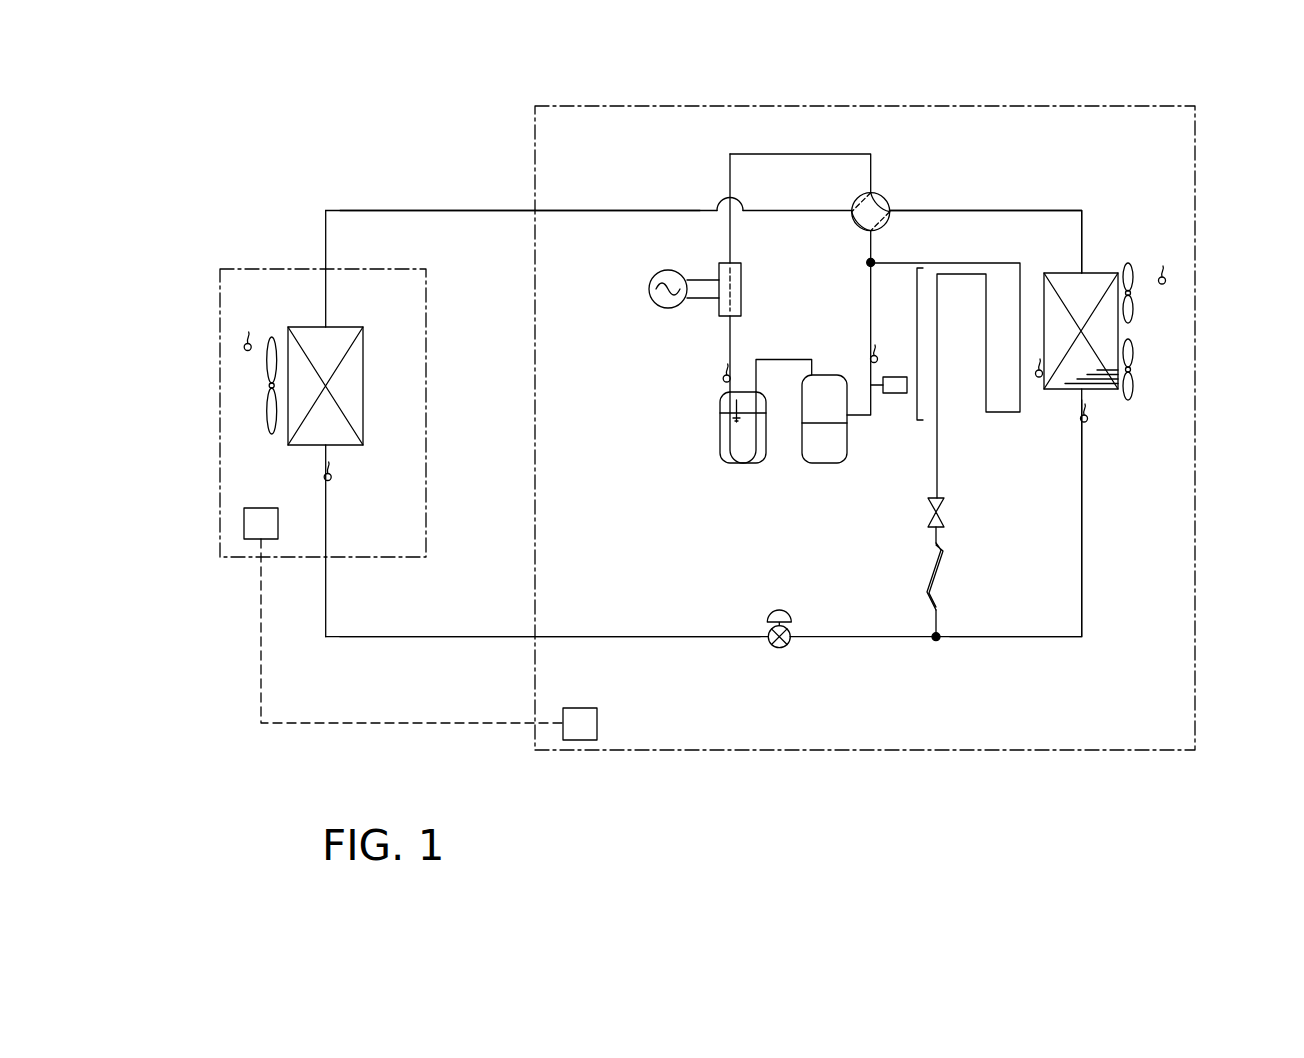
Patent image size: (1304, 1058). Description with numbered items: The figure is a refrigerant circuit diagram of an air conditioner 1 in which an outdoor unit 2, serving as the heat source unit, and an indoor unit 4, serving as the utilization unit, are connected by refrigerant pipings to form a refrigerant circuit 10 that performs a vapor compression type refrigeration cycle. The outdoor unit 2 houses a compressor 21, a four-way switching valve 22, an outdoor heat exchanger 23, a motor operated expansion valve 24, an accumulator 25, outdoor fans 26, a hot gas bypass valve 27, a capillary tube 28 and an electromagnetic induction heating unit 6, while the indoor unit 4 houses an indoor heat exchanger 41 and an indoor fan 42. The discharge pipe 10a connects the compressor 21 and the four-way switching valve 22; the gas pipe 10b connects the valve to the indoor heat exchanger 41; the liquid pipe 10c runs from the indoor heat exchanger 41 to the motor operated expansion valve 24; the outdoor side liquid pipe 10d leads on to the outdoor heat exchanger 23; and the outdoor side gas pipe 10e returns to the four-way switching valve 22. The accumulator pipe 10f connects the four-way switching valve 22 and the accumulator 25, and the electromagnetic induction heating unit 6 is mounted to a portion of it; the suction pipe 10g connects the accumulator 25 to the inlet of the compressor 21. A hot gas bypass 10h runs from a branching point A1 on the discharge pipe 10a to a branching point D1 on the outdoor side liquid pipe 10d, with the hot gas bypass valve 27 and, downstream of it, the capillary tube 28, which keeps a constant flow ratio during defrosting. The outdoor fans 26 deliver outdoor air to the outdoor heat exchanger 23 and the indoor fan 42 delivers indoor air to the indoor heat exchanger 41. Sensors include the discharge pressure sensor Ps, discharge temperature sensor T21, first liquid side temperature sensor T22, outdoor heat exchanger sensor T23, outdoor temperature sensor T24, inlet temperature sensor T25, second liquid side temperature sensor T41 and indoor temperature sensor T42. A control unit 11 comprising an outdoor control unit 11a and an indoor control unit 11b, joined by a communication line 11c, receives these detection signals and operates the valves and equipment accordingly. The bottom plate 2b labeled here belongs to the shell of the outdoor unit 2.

The air conditioner 1 is at (1223, 112).
The outdoor unit 2 is at (1113, 104).
The bottom plate 2b is at (914, 396).
The indoor unit 4 is at (268, 263).
The electromagnetic induction heating unit 6 is at (719, 268).
The refrigerant circuit 10 is at (418, 186).
The discharge pipe 10a is at (868, 333).
The gas pipe 10b is at (468, 208).
The liquid pipe 10c is at (480, 639).
The outdoor side liquid pipe 10d is at (1033, 639).
The outdoor side gas pipe 10e is at (1004, 210).
The accumulator pipe 10f is at (727, 356).
The suction pipe 10g is at (783, 357).
The hot gas bypass 10h is at (942, 462).
The control unit 11 is at (421, 622).
The outdoor control unit 11a is at (597, 722).
The indoor control unit 11b is at (246, 522).
The communication line 11c is at (258, 627).
The compressor 21 is at (831, 454).
The four-way switching valve 22 is at (888, 200).
The outdoor heat exchanger 23 is at (1096, 258).
The motor operated expansion valve 24 is at (780, 648).
The accumulator 25 is at (736, 454).
The outdoor fans 26 is at (1134, 318).
The hot gas bypass valve 27 is at (945, 513).
The capillary tube 28 is at (938, 575).
The indoor heat exchanger 41 is at (356, 385).
The indoor fan 42 is at (268, 418).
The branching point A1 is at (857, 265).
The branching point D1 is at (939, 651).
The discharge pressure sensor Ps is at (896, 394).
The discharge temperature sensor T21 is at (878, 356).
The first liquid side temperature sensor T22 is at (1086, 423).
The outdoor heat exchanger sensor T23 is at (1038, 378).
The outdoor temperature sensor T24 is at (1166, 280).
The inlet temperature sensor T25 is at (720, 384).
The second liquid side temperature sensor T41 is at (331, 477).
The indoor temperature sensor T42 is at (247, 350).